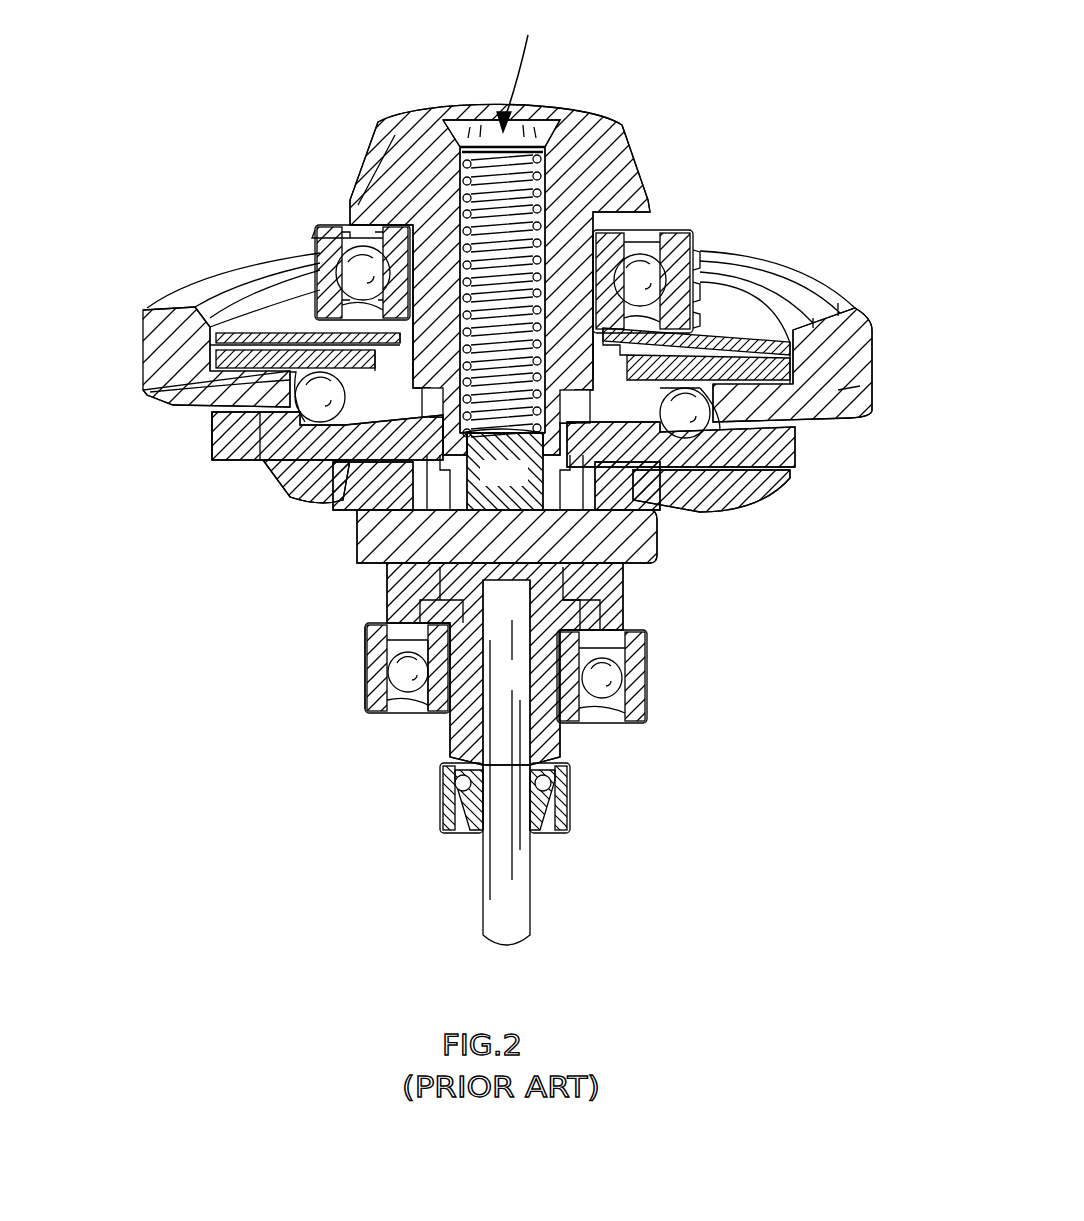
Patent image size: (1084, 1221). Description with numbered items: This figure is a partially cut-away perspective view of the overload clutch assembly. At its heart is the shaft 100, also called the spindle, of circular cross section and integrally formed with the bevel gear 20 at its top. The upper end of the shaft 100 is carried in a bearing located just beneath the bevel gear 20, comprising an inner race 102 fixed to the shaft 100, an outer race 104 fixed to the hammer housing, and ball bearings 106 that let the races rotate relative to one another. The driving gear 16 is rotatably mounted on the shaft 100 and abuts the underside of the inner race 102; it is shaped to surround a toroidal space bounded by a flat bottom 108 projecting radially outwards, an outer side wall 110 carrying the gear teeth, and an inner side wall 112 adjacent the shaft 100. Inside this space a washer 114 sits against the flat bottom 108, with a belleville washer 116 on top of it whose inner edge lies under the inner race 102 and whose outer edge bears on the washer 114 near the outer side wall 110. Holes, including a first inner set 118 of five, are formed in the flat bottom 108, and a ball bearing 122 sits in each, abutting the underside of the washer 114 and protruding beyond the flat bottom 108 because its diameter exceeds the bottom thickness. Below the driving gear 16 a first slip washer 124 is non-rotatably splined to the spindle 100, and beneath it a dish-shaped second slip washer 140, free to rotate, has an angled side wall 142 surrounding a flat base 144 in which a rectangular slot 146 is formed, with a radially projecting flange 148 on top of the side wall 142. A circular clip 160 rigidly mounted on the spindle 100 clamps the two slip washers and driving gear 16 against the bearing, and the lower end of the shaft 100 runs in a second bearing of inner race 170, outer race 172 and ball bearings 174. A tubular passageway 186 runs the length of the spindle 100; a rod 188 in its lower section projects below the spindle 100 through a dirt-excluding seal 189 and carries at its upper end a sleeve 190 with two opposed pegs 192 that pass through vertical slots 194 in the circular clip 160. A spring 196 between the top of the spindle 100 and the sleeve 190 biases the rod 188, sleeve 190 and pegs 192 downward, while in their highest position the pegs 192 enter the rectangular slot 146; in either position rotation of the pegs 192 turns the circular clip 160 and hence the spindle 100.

The driving gear 16 is at (838, 383).
The bevel gear 20 is at (622, 180).
The shaft 100 is at (438, 297).
The inner race 102 is at (393, 228).
The outer race 104 is at (313, 250).
The ball bearings 106 is at (350, 255).
The flat bottom 108 is at (255, 385).
The outer side wall 110 is at (152, 340).
The inner side wall 112 is at (598, 280).
The washer 114 is at (222, 354).
The belleville washer 116 is at (287, 317).
The first inner set of holes 118 is at (297, 455).
The ball bearing 122 is at (832, 424).
The first slip washer 124 is at (803, 472).
The second slip washer 140 is at (743, 483).
The angled side wall 142 is at (337, 446).
The flat base 144 is at (358, 490).
The rectangular slot 146 is at (357, 478).
The flange 148 is at (226, 432).
The circular clip 160 is at (393, 602).
The inner race 170 is at (437, 710).
The outer race 172 is at (380, 657).
The ball bearings 174 is at (393, 683).
The tubular passageway 186 is at (521, 66).
The rod 188 is at (503, 875).
The seal 189 is at (570, 807).
The sleeve 190 is at (505, 471).
The pegs 192 is at (625, 616).
The vertical slots 194 is at (383, 553).
The spring 196 is at (487, 165).